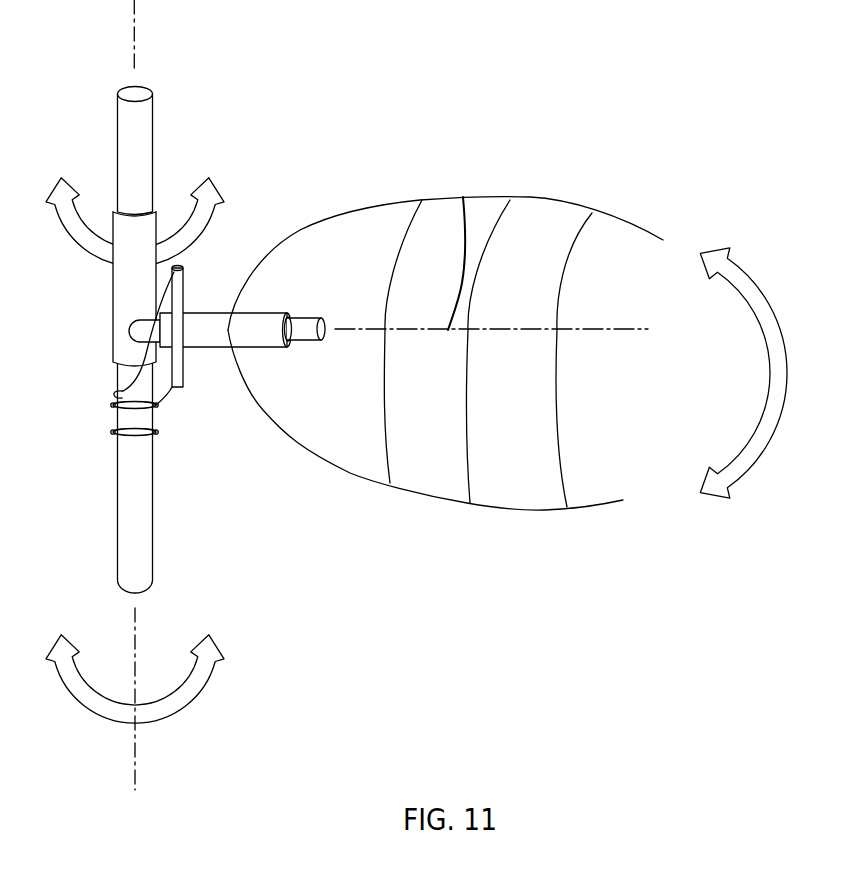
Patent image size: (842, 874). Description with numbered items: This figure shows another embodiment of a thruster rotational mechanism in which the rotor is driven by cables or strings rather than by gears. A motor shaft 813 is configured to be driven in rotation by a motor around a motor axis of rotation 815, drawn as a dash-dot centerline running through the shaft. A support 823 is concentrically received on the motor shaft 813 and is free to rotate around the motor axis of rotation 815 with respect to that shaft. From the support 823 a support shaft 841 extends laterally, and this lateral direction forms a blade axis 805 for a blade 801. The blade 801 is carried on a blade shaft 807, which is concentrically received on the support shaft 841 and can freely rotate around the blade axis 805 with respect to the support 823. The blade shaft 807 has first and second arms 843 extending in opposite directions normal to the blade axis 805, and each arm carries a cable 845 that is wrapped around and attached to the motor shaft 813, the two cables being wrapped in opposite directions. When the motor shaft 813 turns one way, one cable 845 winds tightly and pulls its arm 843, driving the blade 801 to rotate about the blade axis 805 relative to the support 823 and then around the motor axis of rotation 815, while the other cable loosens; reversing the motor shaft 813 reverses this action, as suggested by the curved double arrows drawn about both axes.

The blade 801 is at (533, 502).
The blade axis 805 is at (453, 196).
The blade shaft 807 is at (220, 314).
The motor shaft 813 is at (145, 549).
The motor axis of rotation 815 is at (135, 773).
The support 823 is at (123, 307).
The support shaft 841 is at (302, 326).
The first and second arms 843 is at (183, 288).
The cable 845 is at (121, 390).